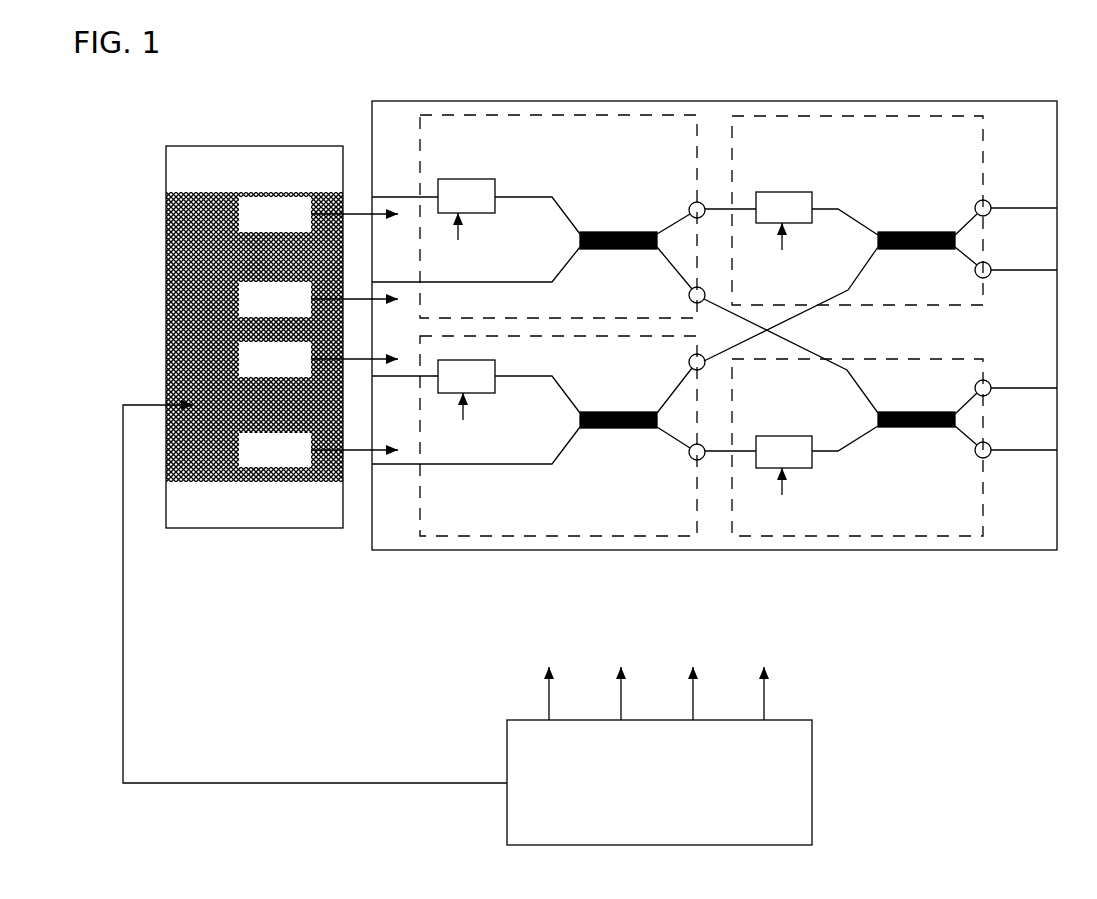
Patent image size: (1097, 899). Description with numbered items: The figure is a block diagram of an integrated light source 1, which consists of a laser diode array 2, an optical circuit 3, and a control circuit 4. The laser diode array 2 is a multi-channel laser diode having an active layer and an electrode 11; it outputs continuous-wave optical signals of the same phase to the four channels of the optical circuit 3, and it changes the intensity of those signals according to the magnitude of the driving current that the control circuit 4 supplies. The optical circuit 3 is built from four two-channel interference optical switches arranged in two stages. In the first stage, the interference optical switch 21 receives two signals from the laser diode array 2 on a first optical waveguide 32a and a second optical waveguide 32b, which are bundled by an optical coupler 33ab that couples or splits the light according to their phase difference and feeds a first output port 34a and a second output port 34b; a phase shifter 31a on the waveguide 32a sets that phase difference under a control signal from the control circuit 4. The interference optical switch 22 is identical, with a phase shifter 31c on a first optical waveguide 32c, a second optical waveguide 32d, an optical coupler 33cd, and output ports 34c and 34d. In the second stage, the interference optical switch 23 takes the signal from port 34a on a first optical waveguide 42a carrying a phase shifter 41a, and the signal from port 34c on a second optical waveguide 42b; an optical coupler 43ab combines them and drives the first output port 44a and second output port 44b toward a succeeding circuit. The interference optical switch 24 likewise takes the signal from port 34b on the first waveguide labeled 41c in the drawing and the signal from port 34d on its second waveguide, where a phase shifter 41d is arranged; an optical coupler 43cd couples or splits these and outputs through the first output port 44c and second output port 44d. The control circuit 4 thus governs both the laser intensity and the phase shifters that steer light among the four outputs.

The integrated light source 1 is at (392, 54).
The laser diode array 2 is at (233, 388).
The electrode 11 is at (166, 300).
The optical circuit 3 is at (708, 101).
The interference optical switch 21 is at (580, 115).
The interference optical switch 22 is at (572, 536).
The interference optical switch 23 is at (888, 116).
The interference optical switch 24 is at (874, 536).
The phase shifter 31a is at (460, 179).
The phase shifter 31c is at (497, 362).
The optical waveguide 32a is at (527, 197).
The optical waveguide 32b is at (520, 282).
The optical waveguide 32c is at (522, 376).
The optical waveguide 32d is at (522, 464).
The optical coupler 33ab is at (595, 232).
The optical coupler 33cd is at (593, 428).
The first output port 34a is at (689, 206).
The second output port 34b is at (689, 296).
The first output port 34c is at (689, 367).
The second output port 34d is at (690, 455).
The phase shifter 41a is at (780, 192).
The optical waveguide 41c is at (860, 388).
The phase shifter 41d is at (768, 436).
The optical waveguide 42a is at (827, 209).
The optical waveguide 42b is at (860, 273).
The optical coupler 43ab is at (912, 232).
The optical coupler 43cd is at (912, 427).
The first output port 44a is at (990, 204).
The second output port 44b is at (990, 266).
The first output port 44c is at (990, 384).
The second output port 44d is at (990, 446).
The control circuit 4 is at (812, 783).